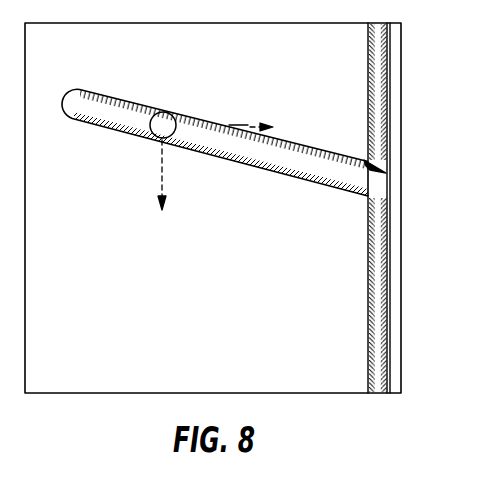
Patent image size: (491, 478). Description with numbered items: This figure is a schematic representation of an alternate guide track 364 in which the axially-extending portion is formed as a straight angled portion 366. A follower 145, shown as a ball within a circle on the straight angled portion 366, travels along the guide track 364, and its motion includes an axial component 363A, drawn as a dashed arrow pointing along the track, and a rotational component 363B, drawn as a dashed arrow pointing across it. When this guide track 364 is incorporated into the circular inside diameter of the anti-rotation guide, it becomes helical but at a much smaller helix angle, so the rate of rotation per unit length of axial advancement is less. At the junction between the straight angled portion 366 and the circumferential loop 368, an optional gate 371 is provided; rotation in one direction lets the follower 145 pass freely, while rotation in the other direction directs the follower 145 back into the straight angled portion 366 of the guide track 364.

The follower 145 is at (161, 113).
The axial component 363A is at (236, 123).
The rotational component 363B is at (157, 157).
The guide track 364 is at (268, 69).
The straight angled portion 366 is at (288, 162).
The circumferential loop 368 is at (380, 205).
The gate 371 is at (376, 168).